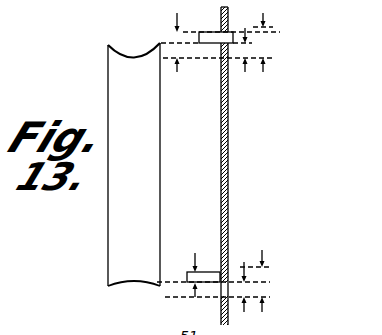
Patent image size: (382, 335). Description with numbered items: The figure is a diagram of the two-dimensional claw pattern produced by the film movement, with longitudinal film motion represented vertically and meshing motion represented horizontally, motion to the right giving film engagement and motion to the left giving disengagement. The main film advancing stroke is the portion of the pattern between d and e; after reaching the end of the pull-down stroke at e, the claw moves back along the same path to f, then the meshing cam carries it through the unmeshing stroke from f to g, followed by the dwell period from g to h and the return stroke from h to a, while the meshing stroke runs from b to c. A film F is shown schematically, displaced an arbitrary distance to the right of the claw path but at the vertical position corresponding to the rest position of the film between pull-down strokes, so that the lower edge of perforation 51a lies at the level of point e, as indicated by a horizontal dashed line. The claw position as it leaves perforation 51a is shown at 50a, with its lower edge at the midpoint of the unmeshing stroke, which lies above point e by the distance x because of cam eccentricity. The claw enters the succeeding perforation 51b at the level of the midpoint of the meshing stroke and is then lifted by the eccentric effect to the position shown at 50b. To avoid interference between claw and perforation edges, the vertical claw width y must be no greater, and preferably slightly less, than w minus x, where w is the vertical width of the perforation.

The film F is at (229, 160).
The claw position leaving perforation 50a is at (208, 272).
The claw position entering perforation 50b is at (213, 43).
The film perforation 51a is at (228, 273).
The succeeding film perforation 51b is at (229, 52).
The claw path point a is at (108, 45).
The claw path point b is at (108, 45).
The claw path point c is at (160, 44).
The claw path point d is at (160, 44).
The claw path point e is at (161, 286).
The claw path point f is at (182, 42).
The claw path point g is at (108, 286).
The claw path point h is at (108, 286).
The eccentric lift distance x is at (245, 170).
The vertical claw width y is at (183, 31).
The vertical width of perforation w is at (263, 162).